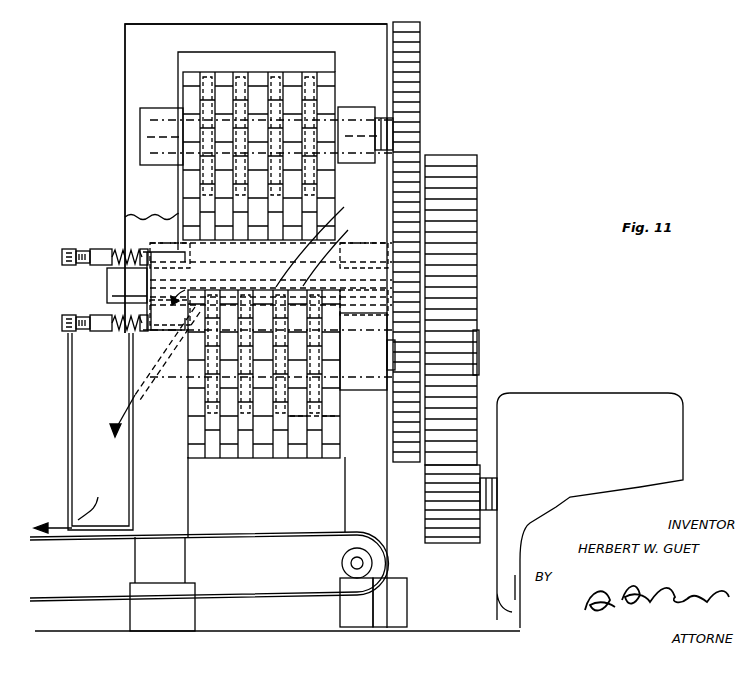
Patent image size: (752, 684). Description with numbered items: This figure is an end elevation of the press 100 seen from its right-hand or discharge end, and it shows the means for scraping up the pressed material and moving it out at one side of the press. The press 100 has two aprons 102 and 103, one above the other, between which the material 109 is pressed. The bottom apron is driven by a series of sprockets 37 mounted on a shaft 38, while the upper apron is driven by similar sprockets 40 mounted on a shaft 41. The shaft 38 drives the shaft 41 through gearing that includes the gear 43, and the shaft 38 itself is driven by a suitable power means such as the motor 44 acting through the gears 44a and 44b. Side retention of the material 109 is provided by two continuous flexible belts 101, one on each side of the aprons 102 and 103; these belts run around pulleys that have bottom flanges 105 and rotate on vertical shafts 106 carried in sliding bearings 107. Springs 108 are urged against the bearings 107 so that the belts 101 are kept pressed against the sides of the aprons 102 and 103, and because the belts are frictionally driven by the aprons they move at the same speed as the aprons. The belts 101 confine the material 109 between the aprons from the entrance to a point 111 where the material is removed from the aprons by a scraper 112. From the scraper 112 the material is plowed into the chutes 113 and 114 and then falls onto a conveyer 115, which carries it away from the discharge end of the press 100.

The press 100 is at (116, 64).
The apron 103 is at (258, 72).
The sprockets 40 is at (306, 74).
The apron 102 is at (296, 457).
The gear 43 is at (422, 56).
The shaft 41 is at (421, 137).
The shaft 38 is at (481, 346).
The gear 44b is at (470, 391).
The gear 44a is at (486, 477).
The motor 44 is at (601, 396).
The point 111 is at (324, 240).
The scraper 112 is at (339, 250).
The sliding bearings 107 is at (141, 246).
The material 109 is at (336, 278).
The continuous flexible belts 101 is at (333, 292).
The springs 108 is at (125, 250).
The bottom flanges 105 is at (112, 301).
The vertical shafts 106 is at (129, 291).
The chute 113 is at (148, 379).
The chute 114 is at (82, 466).
The conveyer 115 is at (218, 535).
The sprockets 37 is at (320, 418).